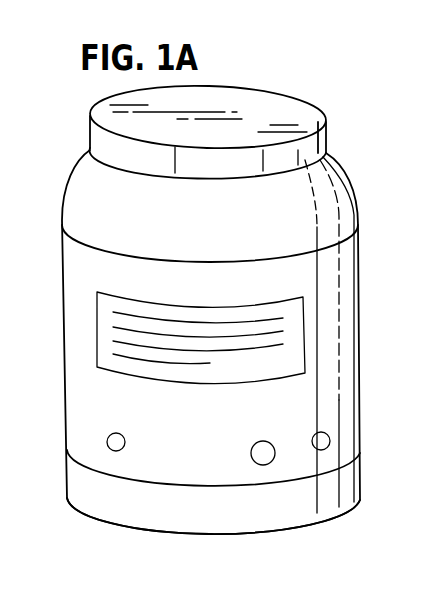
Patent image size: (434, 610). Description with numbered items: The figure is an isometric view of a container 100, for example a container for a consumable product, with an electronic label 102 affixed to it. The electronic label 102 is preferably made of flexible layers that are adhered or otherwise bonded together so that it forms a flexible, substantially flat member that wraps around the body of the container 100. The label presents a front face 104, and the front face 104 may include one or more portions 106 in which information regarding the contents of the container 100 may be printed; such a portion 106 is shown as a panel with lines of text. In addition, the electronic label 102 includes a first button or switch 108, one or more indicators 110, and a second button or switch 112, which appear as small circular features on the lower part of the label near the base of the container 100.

The container 100 is at (125, 520).
The electronic label 102 is at (92, 417).
The front face 104 is at (345, 315).
The portion 106 is at (283, 319).
The first button or switch 108 is at (257, 466).
The indicator 110 is at (330, 442).
The second button or switch 112 is at (123, 450).